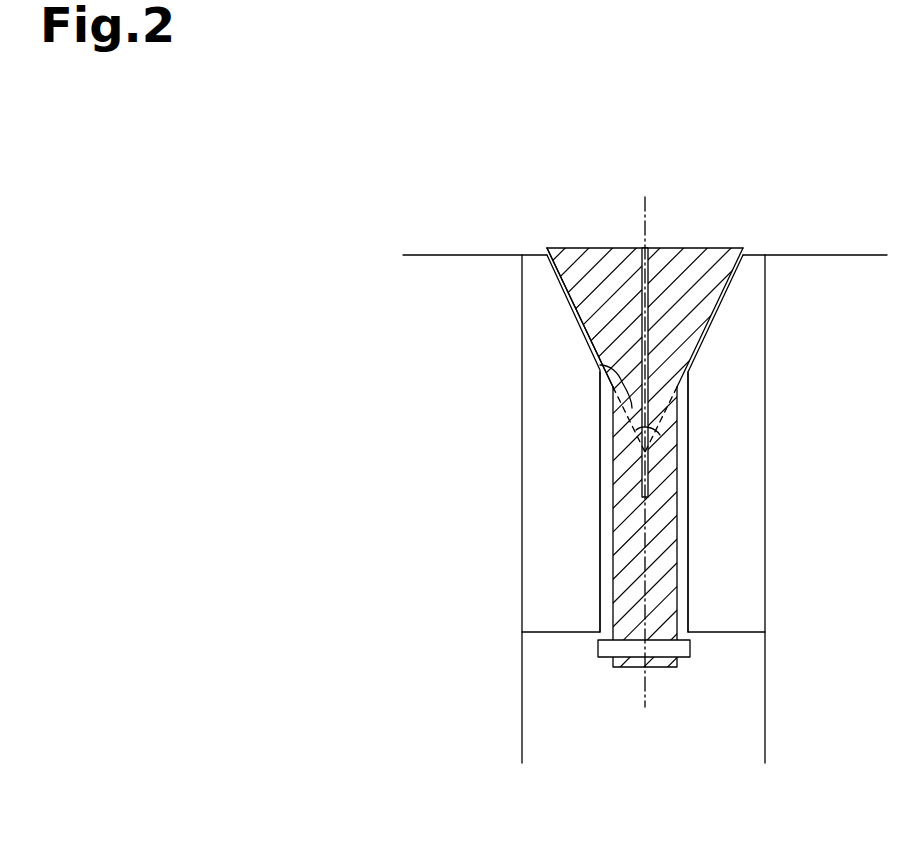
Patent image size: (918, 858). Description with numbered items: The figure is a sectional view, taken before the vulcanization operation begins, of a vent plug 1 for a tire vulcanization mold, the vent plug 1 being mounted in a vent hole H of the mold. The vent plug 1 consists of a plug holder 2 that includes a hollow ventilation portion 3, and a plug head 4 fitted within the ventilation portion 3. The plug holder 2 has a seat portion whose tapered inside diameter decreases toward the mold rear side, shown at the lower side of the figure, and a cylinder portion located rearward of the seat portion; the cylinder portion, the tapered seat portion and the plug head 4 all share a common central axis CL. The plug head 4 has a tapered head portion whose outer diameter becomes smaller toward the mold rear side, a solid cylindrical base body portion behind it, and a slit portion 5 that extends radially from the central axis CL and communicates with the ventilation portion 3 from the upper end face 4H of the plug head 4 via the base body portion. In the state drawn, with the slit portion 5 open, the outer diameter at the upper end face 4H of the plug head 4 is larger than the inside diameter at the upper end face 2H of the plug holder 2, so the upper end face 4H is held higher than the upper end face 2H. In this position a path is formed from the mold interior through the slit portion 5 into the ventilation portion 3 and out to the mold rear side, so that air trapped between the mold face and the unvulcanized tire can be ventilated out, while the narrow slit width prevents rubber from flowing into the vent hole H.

The vent plug 1 is at (519, 375).
The plug holder 2 is at (552, 553).
The upper end face of the plug holder 2H is at (758, 253).
The ventilation portion 3 is at (680, 520).
The plug head 4 is at (698, 292).
The upper end face of the plug head 4H is at (702, 327).
The slit portion 5 is at (632, 293).
The central axis CL is at (652, 432).
The vent hole H is at (658, 727).